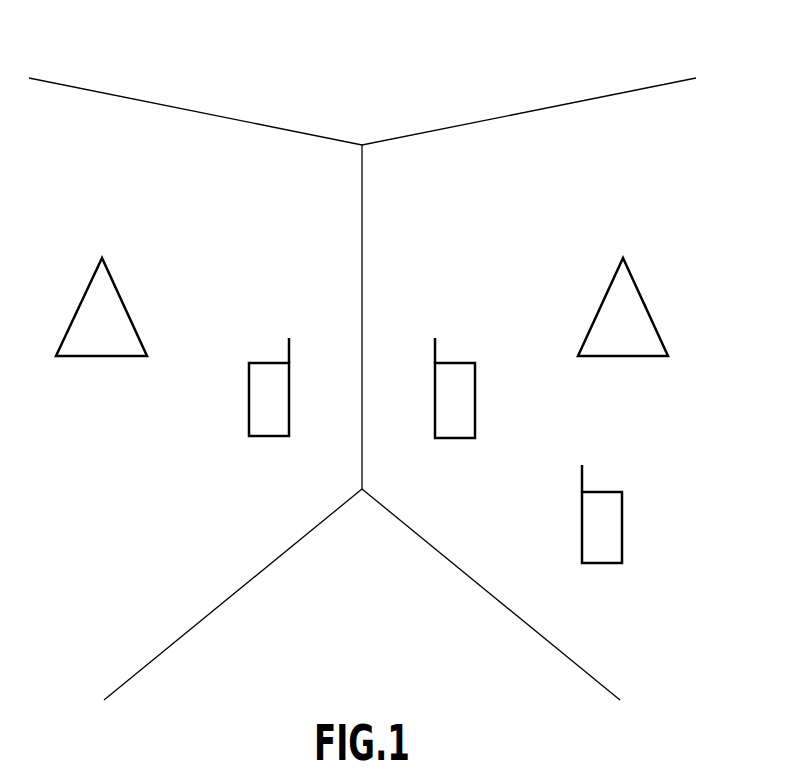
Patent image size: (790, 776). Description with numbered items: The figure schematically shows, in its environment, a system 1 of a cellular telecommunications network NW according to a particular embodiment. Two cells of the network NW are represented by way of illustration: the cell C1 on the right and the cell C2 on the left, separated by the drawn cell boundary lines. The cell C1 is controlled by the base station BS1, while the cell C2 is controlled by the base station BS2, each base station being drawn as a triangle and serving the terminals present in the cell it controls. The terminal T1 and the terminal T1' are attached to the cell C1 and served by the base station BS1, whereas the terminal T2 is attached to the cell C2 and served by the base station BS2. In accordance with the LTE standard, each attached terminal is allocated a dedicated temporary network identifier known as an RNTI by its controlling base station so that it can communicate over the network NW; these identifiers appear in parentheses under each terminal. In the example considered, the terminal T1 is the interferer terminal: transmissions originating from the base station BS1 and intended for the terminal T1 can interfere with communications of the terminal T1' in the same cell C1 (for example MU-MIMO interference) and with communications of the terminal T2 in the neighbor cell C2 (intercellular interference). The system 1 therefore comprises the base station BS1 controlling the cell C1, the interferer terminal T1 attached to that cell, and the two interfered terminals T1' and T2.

The cellular telecommunications network NW is at (334, 101).
The system 1 is at (497, 268).
The cell C1 is at (530, 165).
The cell C2 is at (170, 165).
The base station BS1 is at (645, 333).
The base station BS2 is at (82, 333).
The terminal T1 is at (455, 402).
The terminal T2 is at (258, 408).
The terminal T1' is at (603, 528).